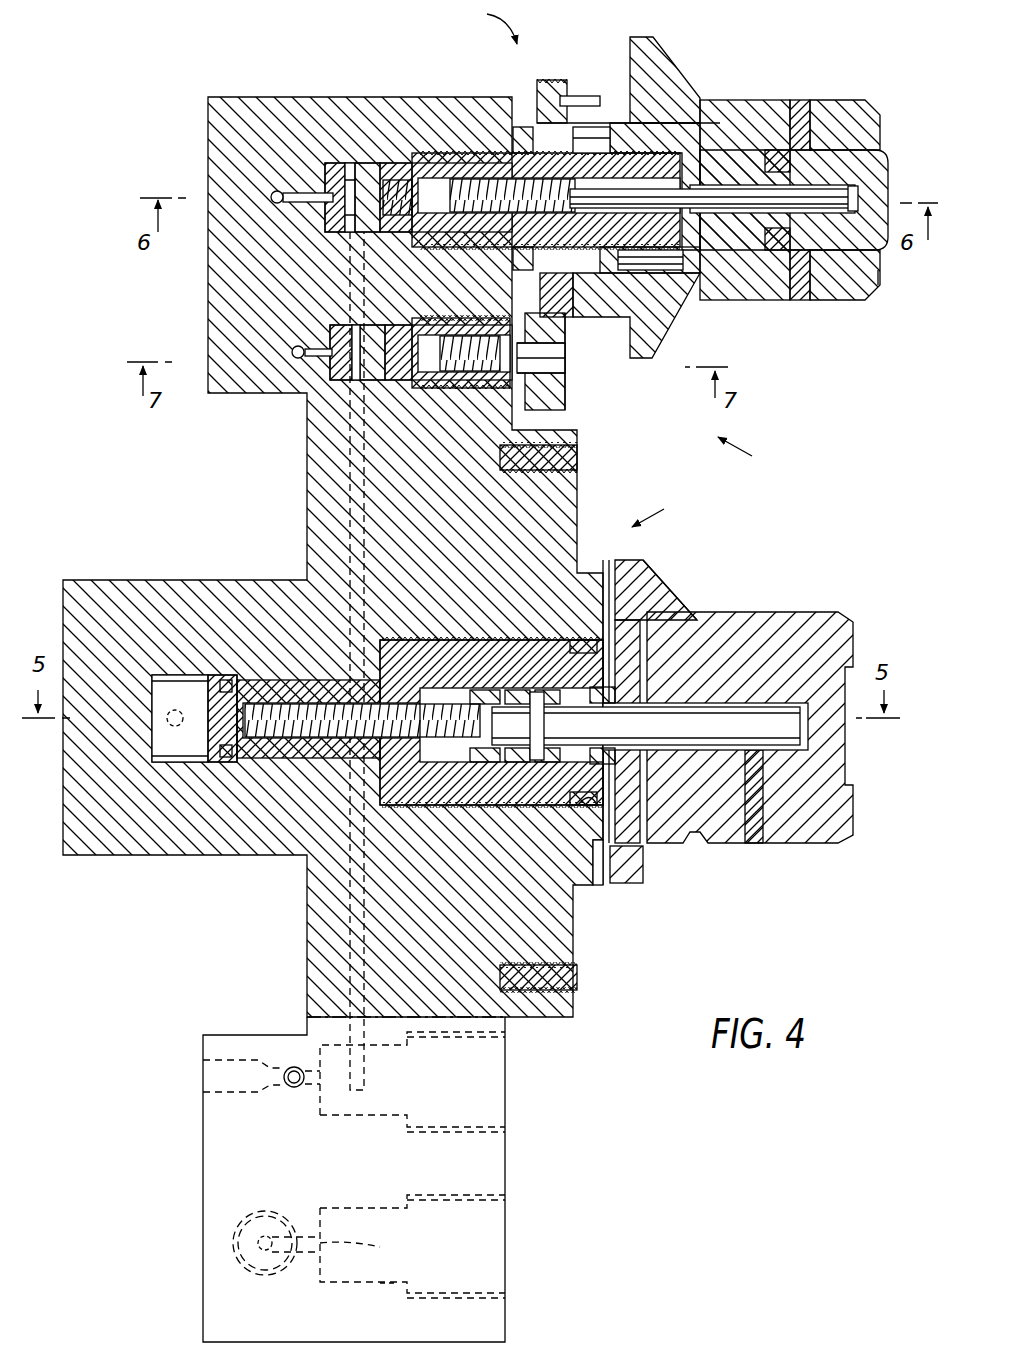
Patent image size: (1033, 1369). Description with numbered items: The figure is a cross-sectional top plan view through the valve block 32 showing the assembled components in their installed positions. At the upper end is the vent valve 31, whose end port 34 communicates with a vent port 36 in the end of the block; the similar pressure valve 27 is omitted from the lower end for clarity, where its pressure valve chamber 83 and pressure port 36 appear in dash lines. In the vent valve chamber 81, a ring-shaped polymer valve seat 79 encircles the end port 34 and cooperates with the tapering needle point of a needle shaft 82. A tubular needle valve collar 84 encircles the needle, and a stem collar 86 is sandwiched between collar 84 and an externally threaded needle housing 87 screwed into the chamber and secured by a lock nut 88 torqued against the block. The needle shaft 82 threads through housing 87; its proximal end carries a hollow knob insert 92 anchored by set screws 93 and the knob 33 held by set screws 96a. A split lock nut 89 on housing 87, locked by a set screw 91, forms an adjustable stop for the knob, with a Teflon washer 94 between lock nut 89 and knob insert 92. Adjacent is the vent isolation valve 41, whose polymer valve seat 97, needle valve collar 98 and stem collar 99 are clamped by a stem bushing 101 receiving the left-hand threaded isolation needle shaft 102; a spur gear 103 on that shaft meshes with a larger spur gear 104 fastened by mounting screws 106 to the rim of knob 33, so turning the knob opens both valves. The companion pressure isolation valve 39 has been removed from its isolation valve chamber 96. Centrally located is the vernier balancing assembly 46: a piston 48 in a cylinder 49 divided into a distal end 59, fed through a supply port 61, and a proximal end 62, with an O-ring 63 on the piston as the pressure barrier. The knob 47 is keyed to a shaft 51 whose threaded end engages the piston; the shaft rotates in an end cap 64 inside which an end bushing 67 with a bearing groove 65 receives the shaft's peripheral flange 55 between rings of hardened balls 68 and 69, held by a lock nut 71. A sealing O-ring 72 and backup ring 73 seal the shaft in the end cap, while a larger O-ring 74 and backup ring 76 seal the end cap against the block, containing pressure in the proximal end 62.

The pressure valve 27 is at (565, 1238).
The vent valve 31 is at (486, 23).
The valve block 32 is at (232, 872).
The knob 33 is at (840, 110).
The end port 34 is at (308, 194).
The pressure port / vent port 36 is at (275, 192).
The pressure isolation valve 39 is at (555, 1110).
The vent isolation valve 41 is at (754, 456).
The vernier balancing assembly 46 is at (660, 512).
The knob 47 is at (790, 625).
The piston 48 is at (296, 680).
The cylinder 49 is at (173, 675).
The shaft 51 is at (725, 712).
The enlarged peripheral flange 55 is at (620, 758).
The distal end 59 is at (212, 762).
The supply port 61 is at (172, 722).
The proximal end 62 is at (455, 703).
The O-ring 63 is at (226, 680).
The end cap 64 is at (630, 830).
The proximal bearing groove 65 is at (585, 640).
The end bushing 67 is at (516, 690).
The ring of hardened balls 68 is at (548, 690).
The ring of hardened balls 69 is at (606, 585).
The lock nut 71 is at (483, 690).
The sealing O-ring 72 is at (650, 600).
The backup sealing ring 73 is at (682, 615).
The O-ring 74 is at (580, 810).
The backup ring 76 is at (598, 860).
The ring-shaped polymer valve seat 79 is at (335, 165).
The vent valve chamber 81 is at (412, 168).
The needle shaft 82 is at (845, 185).
The pressure valve chamber 83 is at (386, 1283).
The tubular needle valve collar 84 is at (370, 165).
The stem collar 86 is at (445, 165).
The needle housing 87 is at (605, 130).
The lock nut 88 is at (520, 125).
The split lock nut 89 is at (690, 135).
The set screw 91 is at (685, 290).
The knob insert 92 is at (878, 272).
The set screws 93 is at (775, 150).
The Teflon washer 94 is at (725, 278).
The isolation valve chamber 96 is at (400, 1055).
The set screws 96a is at (800, 110).
The ring-shaped polymer valve seat 97 is at (304, 354).
The needle valve collar 98 is at (338, 380).
The stem collar 99 is at (405, 388).
The stem bushing 101 is at (566, 395).
The isolation valve needle shaft 102 is at (565, 348).
The spur gear 103 is at (565, 358).
The spur gear 104 is at (560, 80).
The mounting screws 106 is at (542, 96).